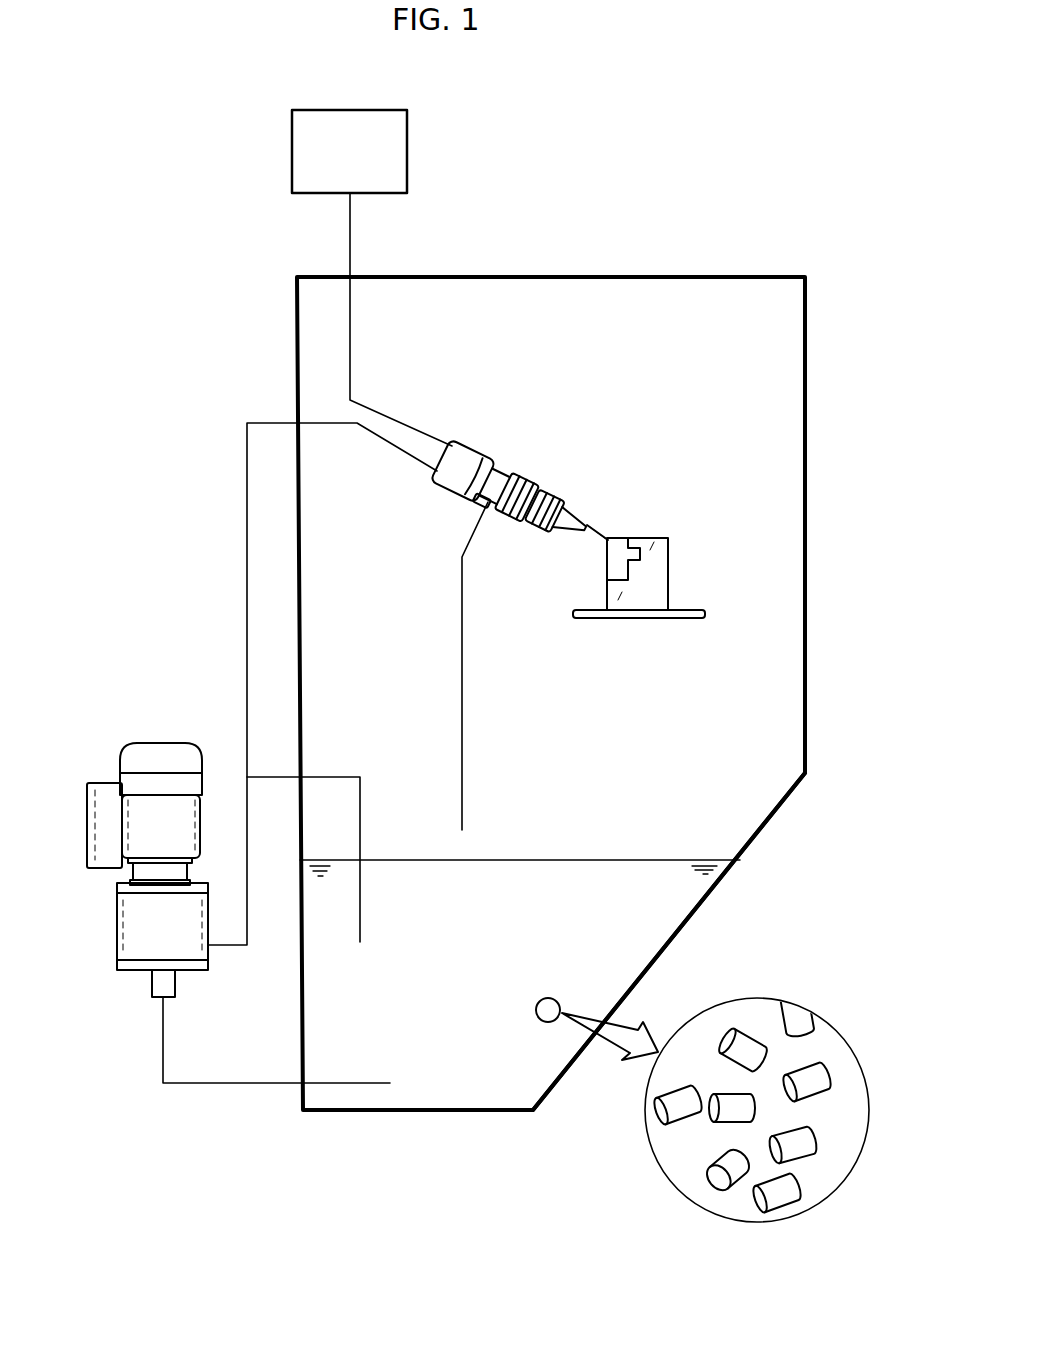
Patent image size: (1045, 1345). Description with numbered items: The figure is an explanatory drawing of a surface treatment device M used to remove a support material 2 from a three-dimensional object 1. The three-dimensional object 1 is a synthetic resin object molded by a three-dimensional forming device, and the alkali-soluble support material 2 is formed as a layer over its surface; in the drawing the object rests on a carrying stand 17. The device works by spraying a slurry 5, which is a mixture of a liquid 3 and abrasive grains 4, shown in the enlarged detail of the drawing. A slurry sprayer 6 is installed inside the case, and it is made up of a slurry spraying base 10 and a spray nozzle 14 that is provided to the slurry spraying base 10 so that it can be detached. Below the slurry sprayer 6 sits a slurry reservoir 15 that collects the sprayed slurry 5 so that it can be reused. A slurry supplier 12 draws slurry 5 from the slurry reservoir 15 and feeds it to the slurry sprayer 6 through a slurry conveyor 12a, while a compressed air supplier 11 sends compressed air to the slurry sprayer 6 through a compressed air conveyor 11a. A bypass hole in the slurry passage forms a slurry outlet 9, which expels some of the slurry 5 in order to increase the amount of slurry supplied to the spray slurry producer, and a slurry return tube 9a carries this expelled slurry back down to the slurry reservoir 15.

The surface treatment device M is at (753, 254).
The three-dimensional object 1 is at (678, 533).
The support material 2 is at (620, 537).
The liquid 3 is at (752, 1002).
The abrasive grains 4 is at (762, 1205).
The slurry 5 is at (639, 855).
The slurry sprayer 6 is at (546, 464).
The slurry outlet 9 is at (493, 524).
The slurry return tube 9a is at (464, 705).
The slurry spraying base 10 is at (446, 506).
The compressed air supplier 11 is at (406, 140).
The compressed air conveyor 11a is at (352, 238).
The slurry supplier 12 is at (128, 936).
The slurry conveyor 12a is at (245, 553).
The spray nozzle 14 is at (552, 541).
The slurry reservoir 15 is at (671, 950).
The carrying stand 17 is at (684, 610).